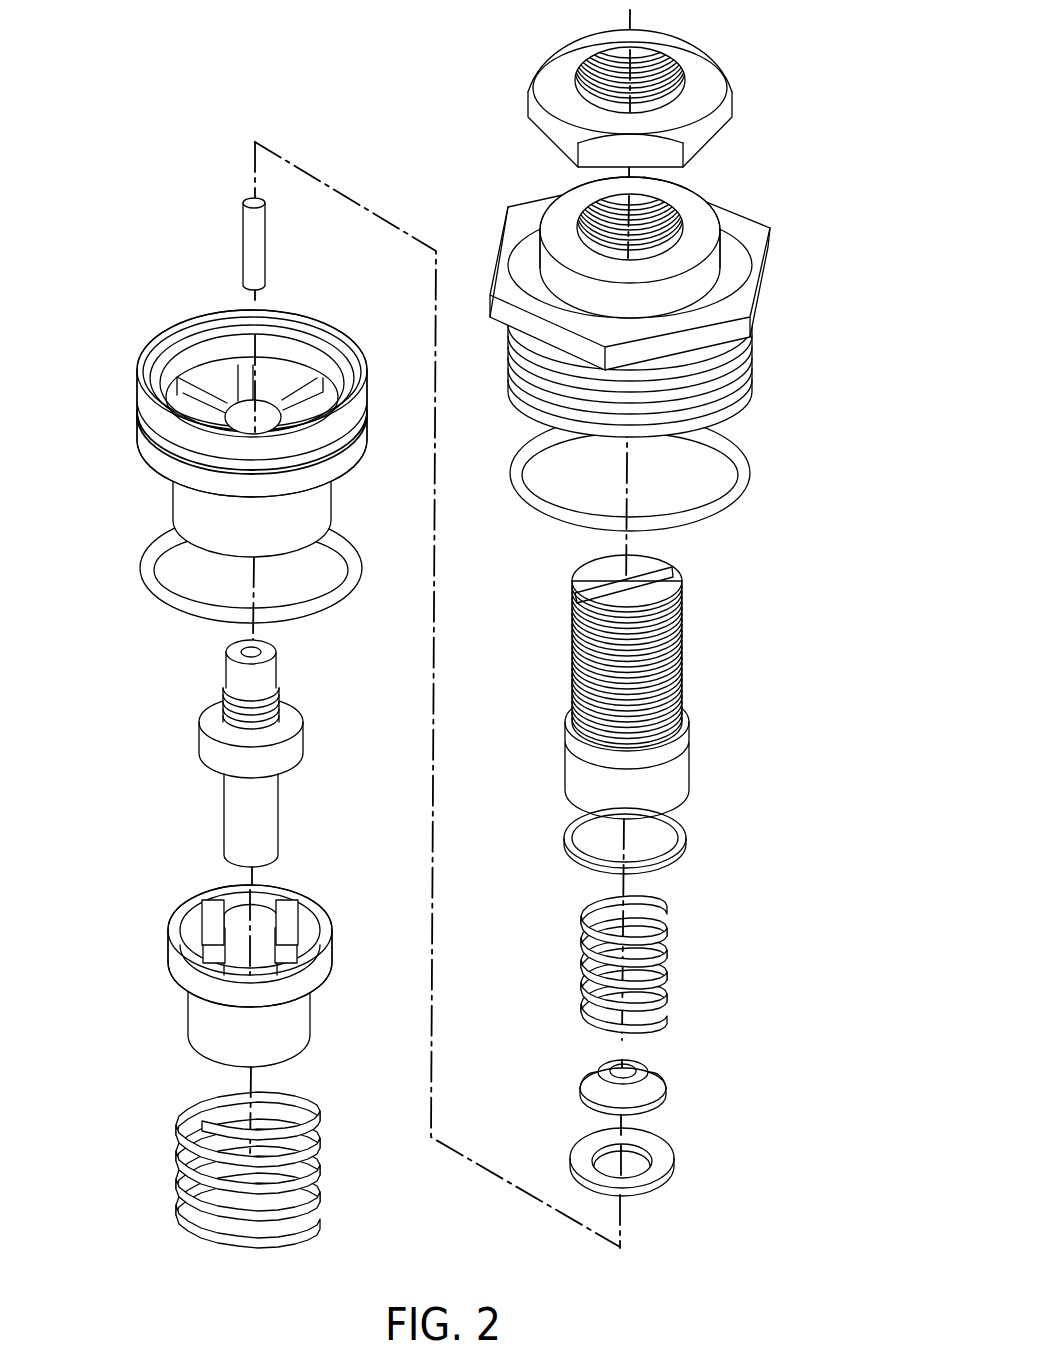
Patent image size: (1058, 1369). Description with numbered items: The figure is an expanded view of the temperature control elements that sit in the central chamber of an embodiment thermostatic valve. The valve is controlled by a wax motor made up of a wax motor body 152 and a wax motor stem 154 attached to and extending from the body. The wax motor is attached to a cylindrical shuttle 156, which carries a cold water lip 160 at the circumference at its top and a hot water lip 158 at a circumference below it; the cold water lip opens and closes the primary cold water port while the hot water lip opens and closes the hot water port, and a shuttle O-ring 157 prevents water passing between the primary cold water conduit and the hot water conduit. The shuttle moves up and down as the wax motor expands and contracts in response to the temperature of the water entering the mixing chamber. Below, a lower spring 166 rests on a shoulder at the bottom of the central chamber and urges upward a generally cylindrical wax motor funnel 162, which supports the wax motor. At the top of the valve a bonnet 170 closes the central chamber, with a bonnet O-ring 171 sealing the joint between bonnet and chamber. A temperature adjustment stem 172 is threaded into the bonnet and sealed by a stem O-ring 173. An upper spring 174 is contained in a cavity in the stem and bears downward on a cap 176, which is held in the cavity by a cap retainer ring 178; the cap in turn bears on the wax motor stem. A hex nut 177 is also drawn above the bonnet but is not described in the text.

The wax motor body 152 is at (200, 743).
The wax motor stem 154 is at (242, 250).
The shuttle 156 is at (163, 355).
The shuttle O-ring 157 is at (143, 563).
The hot water lip 158 is at (217, 423).
The cold water lip 160 is at (147, 377).
The wax motor funnel 162 is at (167, 957).
The lower spring 166 is at (173, 1160).
The bonnet 170 is at (770, 258).
The bonnet O-ring 171 is at (746, 470).
The temperature adjustment stem 172 is at (684, 632).
The stem O-ring 173 is at (688, 835).
The upper spring 174 is at (672, 963).
The cap 176 is at (668, 1088).
The nut 177 is at (733, 97).
The cap retainer ring 178 is at (675, 1172).